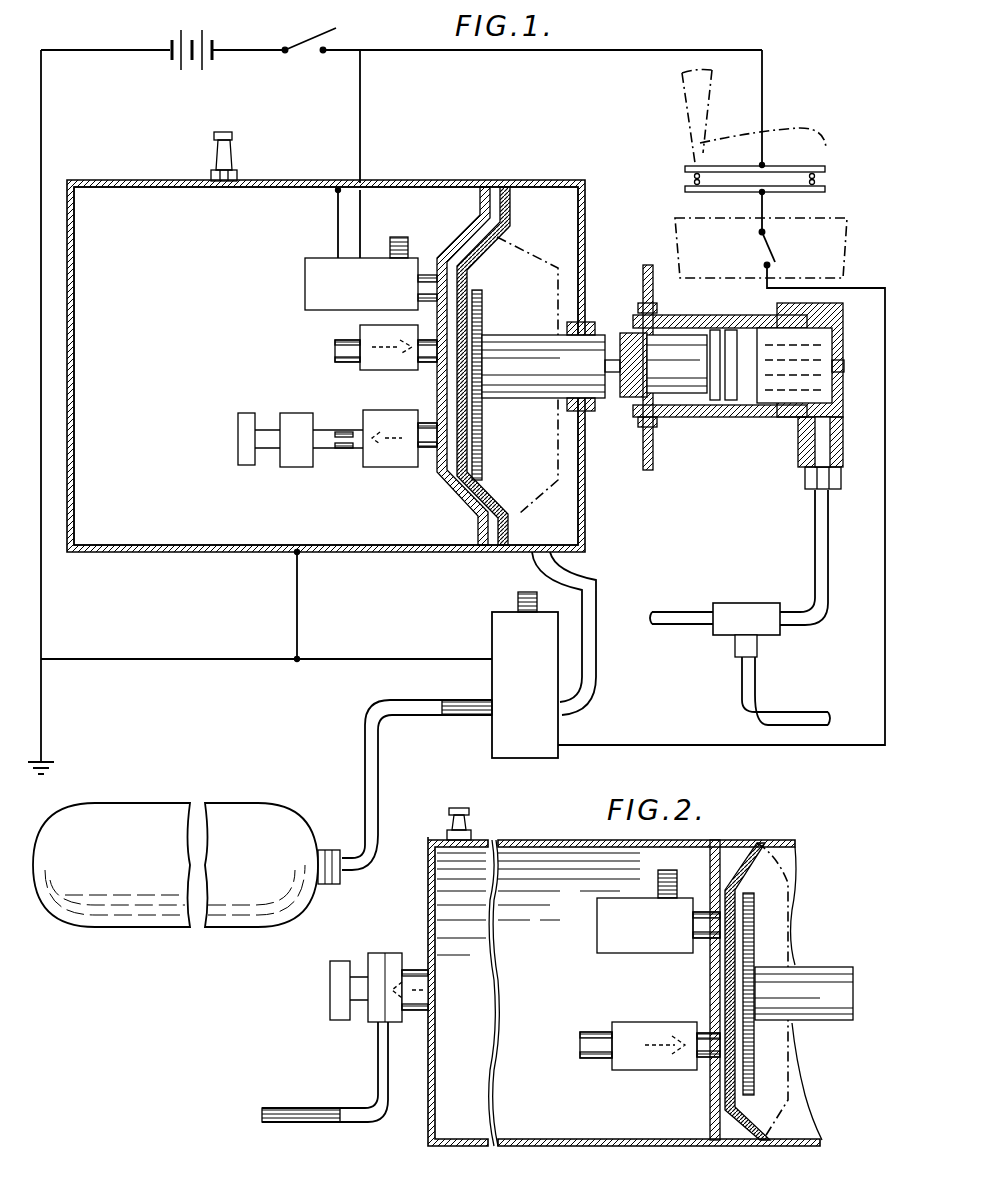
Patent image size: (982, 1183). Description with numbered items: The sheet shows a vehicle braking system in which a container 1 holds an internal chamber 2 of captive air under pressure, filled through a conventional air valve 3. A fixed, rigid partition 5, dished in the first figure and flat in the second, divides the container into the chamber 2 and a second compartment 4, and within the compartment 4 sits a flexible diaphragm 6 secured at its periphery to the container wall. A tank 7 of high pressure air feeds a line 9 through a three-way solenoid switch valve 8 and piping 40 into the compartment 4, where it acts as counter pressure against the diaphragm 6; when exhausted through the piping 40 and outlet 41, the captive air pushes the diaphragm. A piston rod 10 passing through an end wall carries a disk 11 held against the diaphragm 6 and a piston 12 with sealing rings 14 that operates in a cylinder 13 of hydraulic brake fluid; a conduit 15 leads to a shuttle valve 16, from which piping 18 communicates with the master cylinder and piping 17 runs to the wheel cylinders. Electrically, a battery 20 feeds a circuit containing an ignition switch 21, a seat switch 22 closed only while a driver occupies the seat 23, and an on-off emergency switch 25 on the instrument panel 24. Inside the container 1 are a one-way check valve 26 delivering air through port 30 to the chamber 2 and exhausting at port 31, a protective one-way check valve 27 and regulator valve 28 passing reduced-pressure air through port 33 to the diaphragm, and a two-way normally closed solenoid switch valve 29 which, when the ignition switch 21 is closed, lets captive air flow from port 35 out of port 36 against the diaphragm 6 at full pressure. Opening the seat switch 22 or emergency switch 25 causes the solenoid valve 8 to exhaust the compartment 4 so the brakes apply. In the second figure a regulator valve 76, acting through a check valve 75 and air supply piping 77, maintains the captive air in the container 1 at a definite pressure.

In FIG. 1, the container 1 is at (150, 182).
In FIG. 2, the container 1 is at (540, 840).
In FIG. 1, the internal chamber 2 is at (110, 198).
In FIG. 2, the internal chamber 2 is at (555, 860).
In FIG. 1, the air valve 3 is at (232, 160).
In FIG. 2, the air valve 3 is at (472, 822).
In FIG. 1, the compartment 4 is at (540, 205).
In FIG. 1, the partition 5 is at (482, 208).
In FIG. 2, the partition 5 is at (712, 980).
In FIG. 1, the flexible diaphragm 6 is at (495, 255).
In FIG. 2, the flexible diaphragm 6 is at (780, 872).
In FIG. 1, the tank 7 is at (248, 815).
In FIG. 1, the three-way solenoid switch valve 8 is at (498, 645).
In FIG. 1, the line 9 is at (363, 768).
In FIG. 1, the piston rod 10 is at (548, 395).
In FIG. 2, the piston rod 10 is at (828, 975).
In FIG. 1, the disk 11 is at (486, 450).
In FIG. 2, the disk 11 is at (755, 918).
In FIG. 1, the piston 12 is at (675, 340).
In FIG. 1, the cylinder 13 is at (703, 415).
In FIG. 1, the sealing rings 14 is at (722, 418).
In FIG. 1, the conduit 15 is at (822, 575).
In FIG. 1, the shuttle valve 16 is at (745, 612).
In FIG. 1, the piping 17 is at (780, 715).
In FIG. 1, the piping 18 is at (678, 622).
In FIG. 1, the battery 20 is at (228, 46).
In FIG. 1, the ignition switch 21 is at (296, 38).
In FIG. 1, the seat switch 22 is at (812, 172).
In FIG. 1, the seat 23 is at (800, 130).
In FIG. 1, the instrument panel 24 is at (838, 232).
In FIG. 1, the emergency switch 25 is at (757, 240).
In FIG. 1, the one-way check valve 26 is at (362, 330).
In FIG. 2, the one-way check valve 26 is at (645, 1030).
In FIG. 1, the one-way check valve 27 is at (378, 465).
In FIG. 1, the regulator valve 28 is at (243, 420).
In FIG. 1, the two-way normally closed solenoid switch valve 29 is at (312, 275).
In FIG. 2, the two-way normally closed solenoid switch valve 29 is at (603, 953).
In FIG. 1, the port 30 is at (440, 355).
In FIG. 2, the port 30 is at (705, 1060).
In FIG. 1, the port 31 is at (336, 352).
In FIG. 2, the port 31 is at (592, 1058).
In FIG. 1, the port 33 is at (440, 462).
In FIG. 1, the port 35 is at (400, 240).
In FIG. 2, the port 35 is at (668, 898).
In FIG. 1, the port 36 is at (418, 285).
In FIG. 2, the port 36 is at (700, 935).
In FIG. 1, the piping 40 is at (580, 590).
In FIG. 1, the outlet 41 is at (525, 592).
In FIG. 2, the check valve 75 is at (378, 955).
In FIG. 2, the regulator valve 76 is at (340, 986).
In FIG. 2, the air supply piping 77 is at (335, 1086).